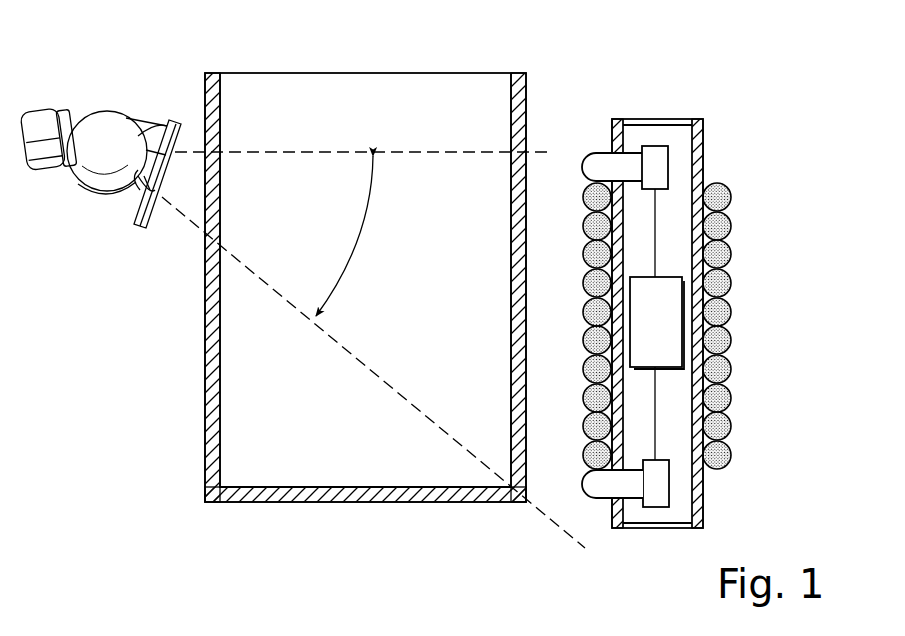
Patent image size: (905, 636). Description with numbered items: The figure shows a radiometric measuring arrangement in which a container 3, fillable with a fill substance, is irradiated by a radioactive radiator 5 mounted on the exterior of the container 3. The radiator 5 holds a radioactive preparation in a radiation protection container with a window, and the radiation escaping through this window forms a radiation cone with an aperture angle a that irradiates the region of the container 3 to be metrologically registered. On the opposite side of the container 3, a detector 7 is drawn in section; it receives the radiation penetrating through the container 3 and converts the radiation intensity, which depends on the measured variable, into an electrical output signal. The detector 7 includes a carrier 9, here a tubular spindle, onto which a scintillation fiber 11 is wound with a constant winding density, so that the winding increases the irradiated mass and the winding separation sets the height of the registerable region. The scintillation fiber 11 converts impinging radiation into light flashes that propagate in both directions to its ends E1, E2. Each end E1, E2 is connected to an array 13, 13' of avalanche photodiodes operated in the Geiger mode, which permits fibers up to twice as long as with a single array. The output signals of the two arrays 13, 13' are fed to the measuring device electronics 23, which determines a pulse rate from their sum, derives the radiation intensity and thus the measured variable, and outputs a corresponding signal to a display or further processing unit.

The container 3 is at (210, 342).
The radioactive radiator 5 is at (113, 127).
The detector 7 is at (744, 292).
The carrier 9 is at (703, 133).
The scintillation fiber 11 is at (728, 341).
The array of avalanche photodiodes 13 is at (659, 529).
The array of avalanche photodiodes 13' is at (668, 128).
The measuring device electronics 23 is at (671, 334).
The end of scintillation fiber E1 is at (600, 488).
The end of scintillation fiber E2 is at (598, 164).
The aperture angle a is at (344, 236).